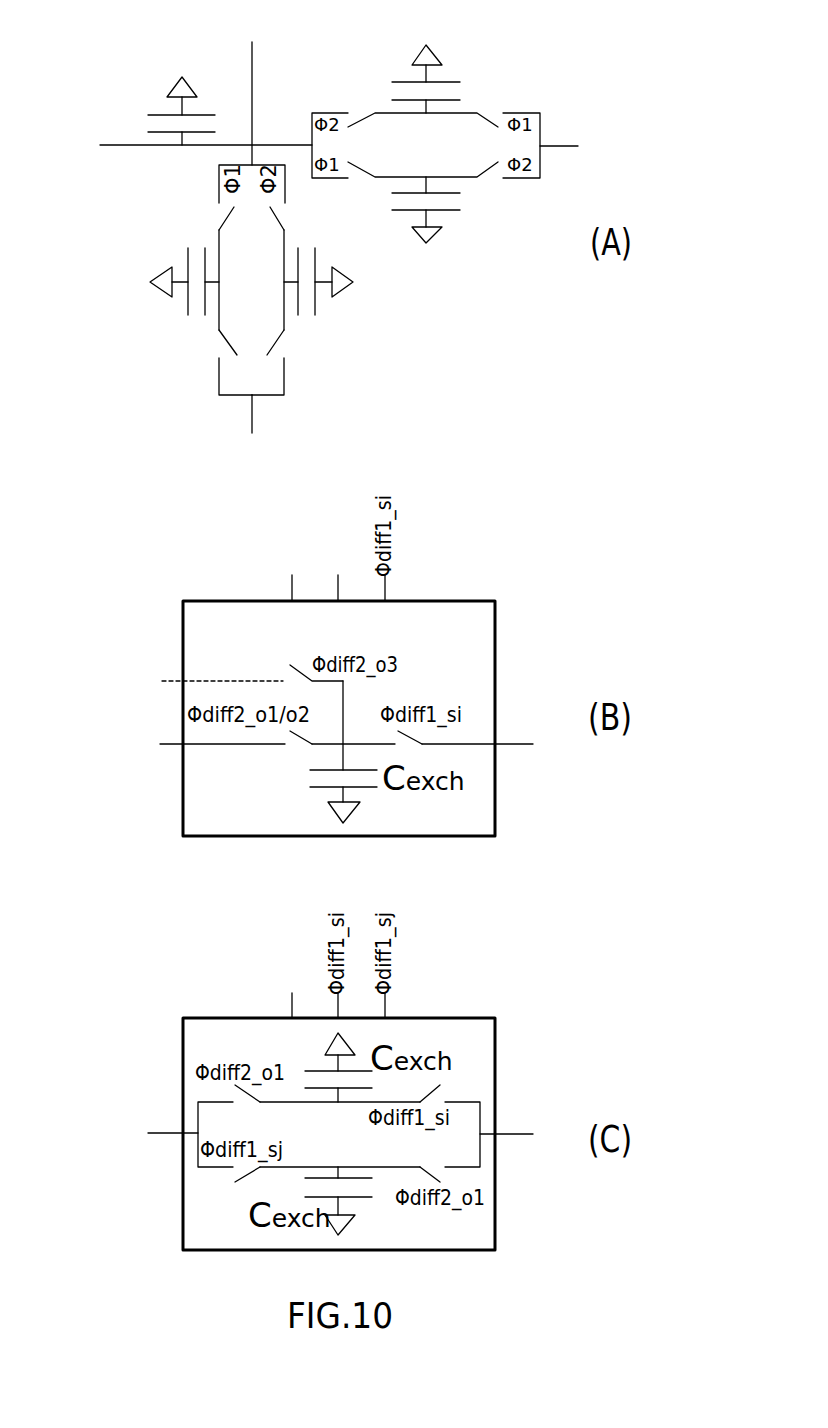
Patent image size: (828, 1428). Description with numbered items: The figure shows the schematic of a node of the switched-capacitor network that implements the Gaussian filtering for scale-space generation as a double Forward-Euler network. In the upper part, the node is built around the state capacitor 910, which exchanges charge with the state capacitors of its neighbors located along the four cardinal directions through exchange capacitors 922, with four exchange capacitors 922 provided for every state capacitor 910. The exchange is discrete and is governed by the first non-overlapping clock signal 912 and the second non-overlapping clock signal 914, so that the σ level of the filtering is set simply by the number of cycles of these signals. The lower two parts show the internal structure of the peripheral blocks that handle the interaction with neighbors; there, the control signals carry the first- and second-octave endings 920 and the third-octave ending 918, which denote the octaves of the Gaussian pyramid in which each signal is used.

The state capacitor 910 is at (148, 126).
The non-overlapping signal φ1 912 is at (219, 376).
The non-overlapping signal φ2 914 is at (284, 376).
The signal ending o3 918 is at (282, 548).
The signal endings o1, o2 920 is at (350, 468).
The exchange capacitor 922 is at (197, 245).